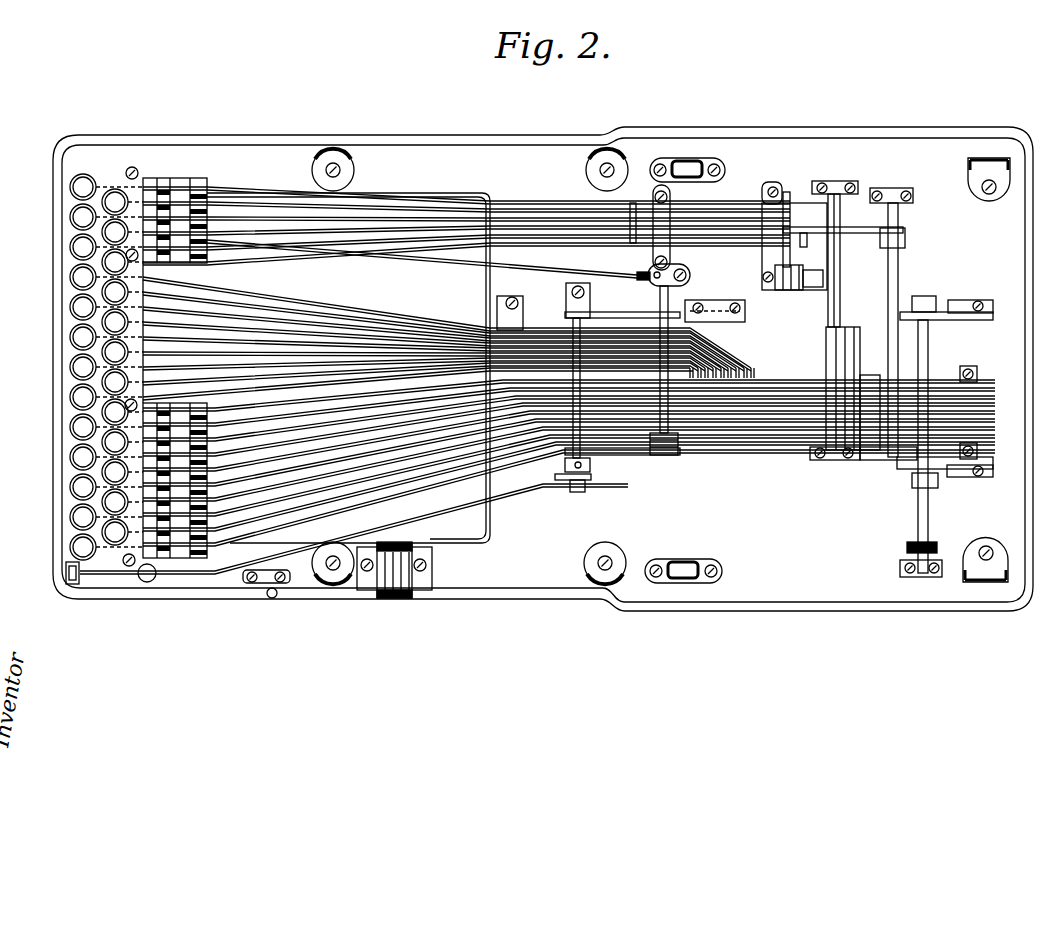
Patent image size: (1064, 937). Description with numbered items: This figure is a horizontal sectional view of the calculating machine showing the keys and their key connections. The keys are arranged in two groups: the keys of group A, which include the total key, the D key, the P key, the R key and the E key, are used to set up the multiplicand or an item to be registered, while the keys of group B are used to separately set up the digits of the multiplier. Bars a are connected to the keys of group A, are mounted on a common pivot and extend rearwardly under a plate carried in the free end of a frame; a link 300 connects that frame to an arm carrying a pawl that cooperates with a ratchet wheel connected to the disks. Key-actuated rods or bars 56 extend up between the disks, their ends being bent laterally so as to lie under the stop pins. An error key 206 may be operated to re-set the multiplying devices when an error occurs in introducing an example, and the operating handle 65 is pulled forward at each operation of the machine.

The group A keys A is at (78, 263).
The group B keys B is at (70, 420).
The bars a is at (309, 300).
The key-actuated rods or bars 56 is at (750, 374).
The error key 206 is at (64, 576).
The link 300 is at (680, 447).
The operating handle 65 is at (396, 598).